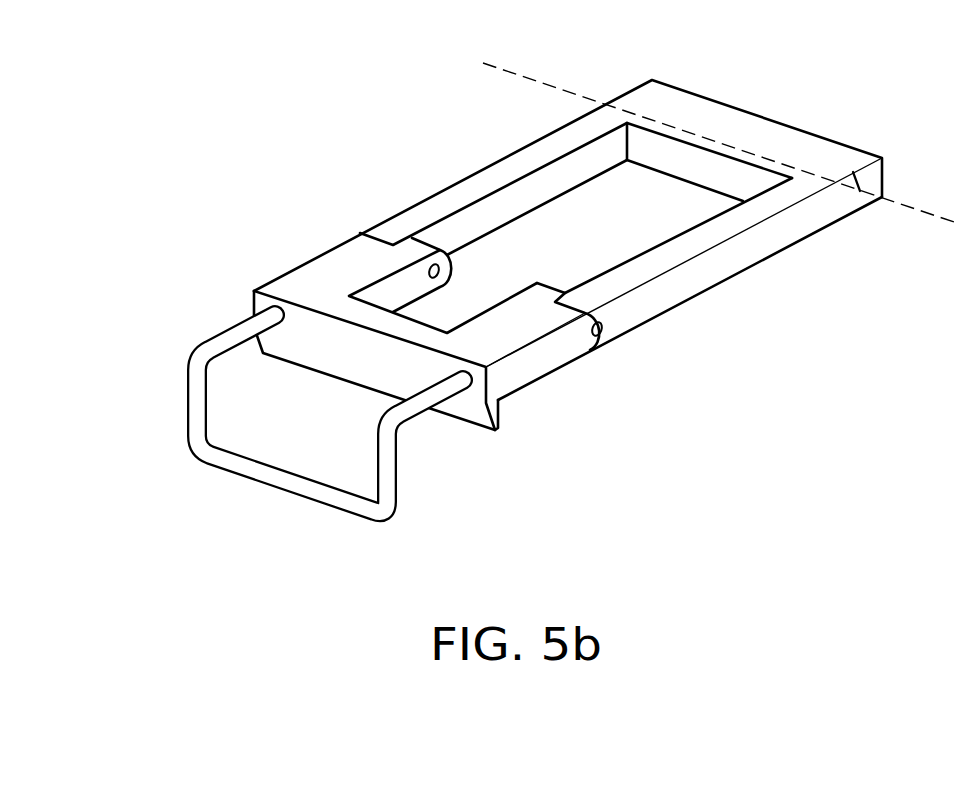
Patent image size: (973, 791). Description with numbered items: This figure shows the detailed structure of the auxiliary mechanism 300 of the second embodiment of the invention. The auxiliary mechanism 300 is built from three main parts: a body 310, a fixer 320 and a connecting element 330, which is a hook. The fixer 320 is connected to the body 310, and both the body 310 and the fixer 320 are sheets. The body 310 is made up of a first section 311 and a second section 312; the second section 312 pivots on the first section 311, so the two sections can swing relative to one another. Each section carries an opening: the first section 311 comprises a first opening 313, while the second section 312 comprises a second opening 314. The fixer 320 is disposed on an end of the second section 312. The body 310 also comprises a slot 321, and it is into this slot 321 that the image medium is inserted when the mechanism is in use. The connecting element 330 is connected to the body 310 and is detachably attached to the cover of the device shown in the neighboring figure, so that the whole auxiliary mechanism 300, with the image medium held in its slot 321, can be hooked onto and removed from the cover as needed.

The auxiliary mechanism 300 is at (96, 88).
The body 310 is at (568, 317).
The first section 311 is at (543, 363).
The second section 312 is at (653, 304).
The first opening 313 is at (458, 305).
The second opening 314 is at (577, 263).
The fixer 320 is at (747, 123).
The slot 321 is at (840, 167).
The connecting element (hook) 330 is at (414, 412).